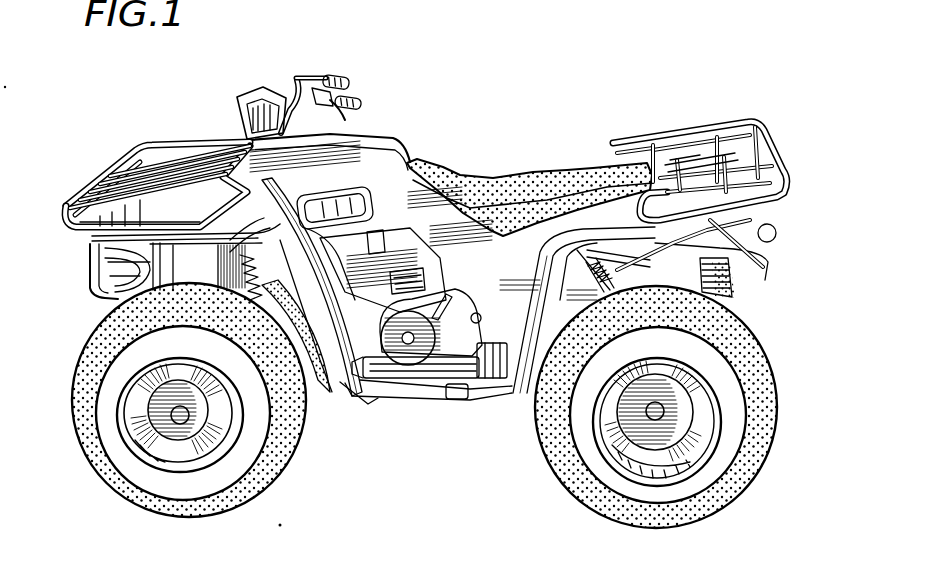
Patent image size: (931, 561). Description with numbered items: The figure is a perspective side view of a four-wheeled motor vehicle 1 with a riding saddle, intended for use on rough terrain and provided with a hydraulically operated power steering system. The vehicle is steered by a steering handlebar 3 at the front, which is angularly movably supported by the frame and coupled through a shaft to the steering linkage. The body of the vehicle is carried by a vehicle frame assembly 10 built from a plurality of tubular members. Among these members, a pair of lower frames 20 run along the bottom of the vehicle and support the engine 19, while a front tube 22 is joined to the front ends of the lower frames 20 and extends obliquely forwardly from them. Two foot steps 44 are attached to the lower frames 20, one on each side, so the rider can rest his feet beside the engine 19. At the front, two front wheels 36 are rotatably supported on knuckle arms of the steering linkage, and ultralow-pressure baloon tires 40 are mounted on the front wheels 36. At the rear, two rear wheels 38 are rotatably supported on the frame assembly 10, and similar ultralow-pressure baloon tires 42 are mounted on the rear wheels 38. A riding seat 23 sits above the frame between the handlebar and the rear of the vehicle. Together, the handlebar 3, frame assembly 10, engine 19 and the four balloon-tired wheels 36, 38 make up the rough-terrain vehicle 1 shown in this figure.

The four-wheeled motor vehicle 1 is at (438, 106).
The steering handlebar 3 is at (305, 73).
The vehicle frame assembly 10 is at (408, 403).
The engine 19 is at (370, 410).
The lower frames 20 is at (480, 398).
The front tube 22 is at (300, 365).
The seat 23 is at (518, 172).
The front wheels 36 is at (158, 452).
The rear wheels 38 is at (718, 413).
The ultralow-pressure baloon tires 40 is at (252, 494).
The ultralow-pressure baloon tires 42 is at (728, 493).
The foot steps 44 is at (446, 393).